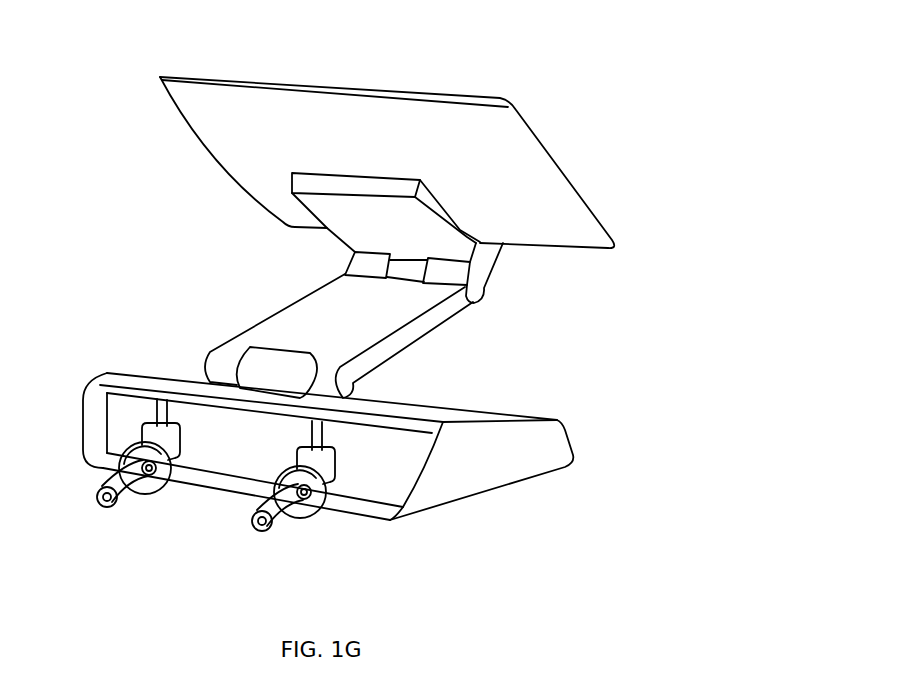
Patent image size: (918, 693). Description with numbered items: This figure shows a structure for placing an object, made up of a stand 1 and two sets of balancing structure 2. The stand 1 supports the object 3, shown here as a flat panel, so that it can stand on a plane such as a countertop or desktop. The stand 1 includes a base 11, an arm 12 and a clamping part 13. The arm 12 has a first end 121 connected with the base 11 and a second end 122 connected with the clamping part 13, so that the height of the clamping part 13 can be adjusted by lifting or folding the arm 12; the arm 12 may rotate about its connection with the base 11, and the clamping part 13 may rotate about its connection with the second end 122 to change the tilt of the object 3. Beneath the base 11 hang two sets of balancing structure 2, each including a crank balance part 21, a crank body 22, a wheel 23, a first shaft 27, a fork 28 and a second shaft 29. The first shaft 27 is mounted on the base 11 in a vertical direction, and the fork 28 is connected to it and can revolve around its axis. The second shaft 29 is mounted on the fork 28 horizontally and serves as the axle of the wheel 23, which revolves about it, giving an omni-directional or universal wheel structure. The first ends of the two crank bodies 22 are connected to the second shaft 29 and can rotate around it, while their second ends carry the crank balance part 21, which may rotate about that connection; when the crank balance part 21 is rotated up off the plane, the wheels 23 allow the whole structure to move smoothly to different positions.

The stand 1 is at (222, 308).
The balancing structure 2 is at (239, 509).
The object 3 is at (545, 190).
The base 11 is at (477, 438).
The arm 12 is at (428, 340).
The clamping part 13 is at (347, 225).
The crank balance part 21 is at (225, 584).
The crank body 22 is at (133, 495).
The wheel 23 is at (141, 497).
The first shaft 27 is at (181, 458).
The fork 28 is at (172, 480).
The second shaft 29 is at (150, 500).
The first end 121 is at (357, 381).
The second end 122 is at (488, 305).